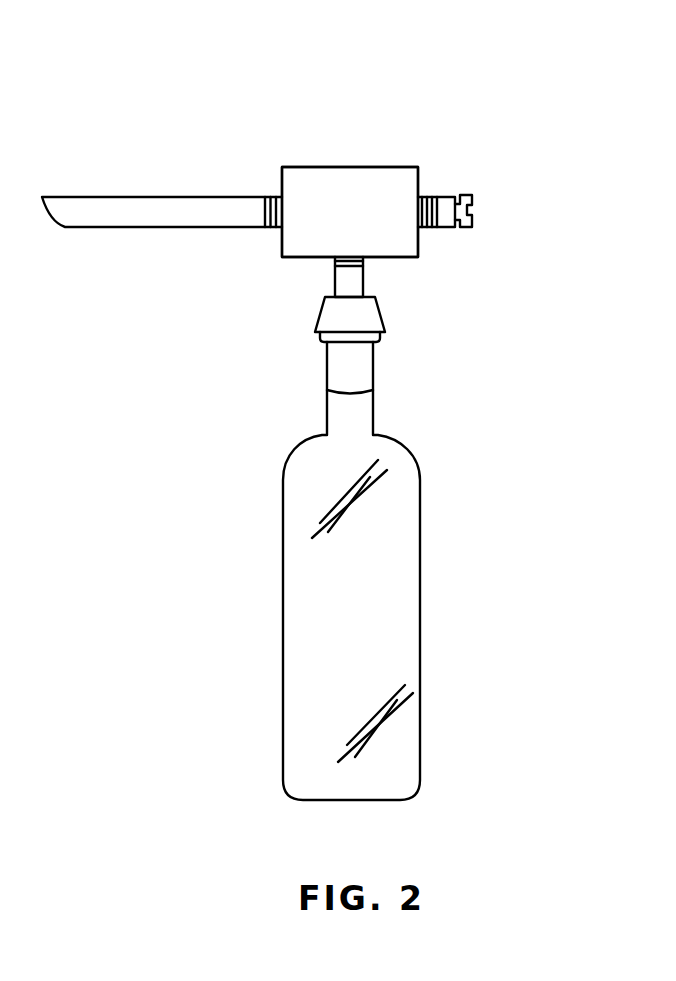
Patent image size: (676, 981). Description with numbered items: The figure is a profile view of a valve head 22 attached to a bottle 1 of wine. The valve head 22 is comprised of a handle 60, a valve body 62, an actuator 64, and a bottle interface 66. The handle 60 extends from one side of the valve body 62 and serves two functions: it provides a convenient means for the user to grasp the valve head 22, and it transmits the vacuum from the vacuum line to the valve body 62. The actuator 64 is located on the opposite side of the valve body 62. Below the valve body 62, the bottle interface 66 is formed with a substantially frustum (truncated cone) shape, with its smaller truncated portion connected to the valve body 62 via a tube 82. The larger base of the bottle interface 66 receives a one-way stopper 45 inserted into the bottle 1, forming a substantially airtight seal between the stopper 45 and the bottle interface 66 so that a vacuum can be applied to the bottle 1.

The bottle 1 is at (380, 606).
The valve head 22 is at (292, 145).
The stopper 45 is at (324, 345).
The handle 60 is at (127, 214).
The valve body 62 is at (397, 180).
The actuator 64 is at (470, 207).
The bottle interface 66 is at (358, 313).
The tube 82 is at (356, 282).